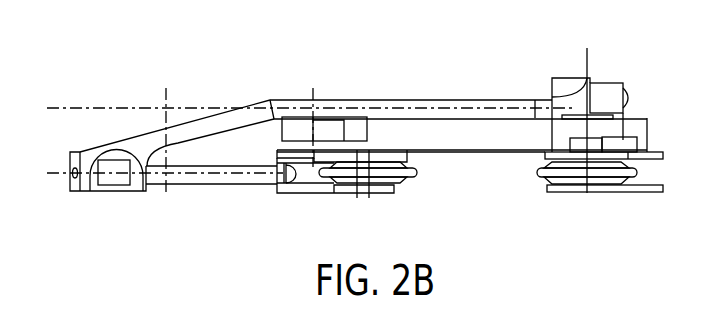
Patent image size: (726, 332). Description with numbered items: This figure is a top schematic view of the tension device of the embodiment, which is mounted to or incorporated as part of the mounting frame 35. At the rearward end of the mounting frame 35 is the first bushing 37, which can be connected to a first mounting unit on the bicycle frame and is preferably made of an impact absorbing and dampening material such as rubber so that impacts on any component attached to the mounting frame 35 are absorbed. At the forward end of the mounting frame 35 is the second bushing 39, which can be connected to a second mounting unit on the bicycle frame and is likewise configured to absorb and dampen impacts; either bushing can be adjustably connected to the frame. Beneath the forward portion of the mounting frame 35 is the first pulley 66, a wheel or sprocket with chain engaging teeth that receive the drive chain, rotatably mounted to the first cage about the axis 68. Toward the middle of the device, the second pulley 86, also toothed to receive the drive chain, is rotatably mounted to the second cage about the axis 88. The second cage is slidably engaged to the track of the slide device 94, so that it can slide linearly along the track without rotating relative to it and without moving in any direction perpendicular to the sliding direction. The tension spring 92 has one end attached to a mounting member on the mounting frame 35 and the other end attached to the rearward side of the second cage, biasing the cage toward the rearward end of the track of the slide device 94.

The mounting frame 35 is at (462, 97).
The first bushing 37 is at (108, 160).
The second bushing 39 is at (612, 82).
The first pulley 66 is at (637, 172).
The axis 68 is at (590, 186).
The second pulley 86 is at (409, 178).
The axis 88 is at (369, 196).
The tension spring 92 is at (183, 182).
The slide device 94 is at (462, 152).